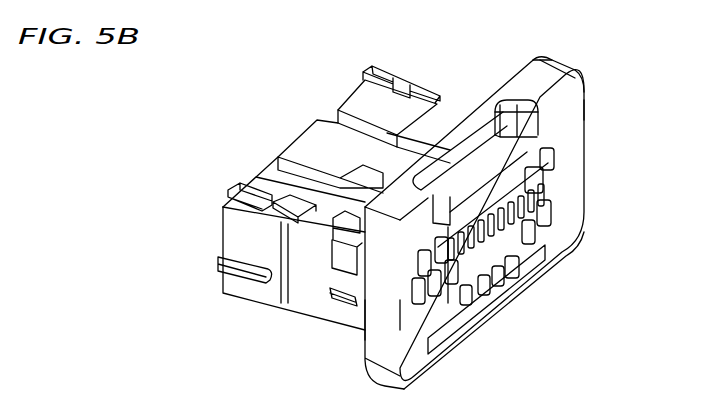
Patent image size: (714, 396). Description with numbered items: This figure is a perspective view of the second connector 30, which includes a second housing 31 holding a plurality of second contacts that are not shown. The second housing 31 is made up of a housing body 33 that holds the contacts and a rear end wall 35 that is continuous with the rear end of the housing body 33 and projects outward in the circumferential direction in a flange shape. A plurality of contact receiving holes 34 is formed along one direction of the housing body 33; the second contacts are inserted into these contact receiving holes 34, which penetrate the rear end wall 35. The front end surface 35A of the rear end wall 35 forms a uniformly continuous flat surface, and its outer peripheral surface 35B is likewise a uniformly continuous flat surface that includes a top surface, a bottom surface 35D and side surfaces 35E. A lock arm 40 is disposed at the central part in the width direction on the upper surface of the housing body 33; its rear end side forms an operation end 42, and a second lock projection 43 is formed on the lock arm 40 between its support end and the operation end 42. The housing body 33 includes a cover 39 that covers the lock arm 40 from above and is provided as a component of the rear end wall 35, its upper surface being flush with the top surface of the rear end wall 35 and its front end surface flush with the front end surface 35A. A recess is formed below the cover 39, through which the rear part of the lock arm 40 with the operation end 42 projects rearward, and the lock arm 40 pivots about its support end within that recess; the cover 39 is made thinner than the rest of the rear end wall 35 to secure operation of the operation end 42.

The second connector 30 is at (588, 100).
The second housing 31 is at (349, 94).
The housing body 33 is at (440, 93).
The contact receiving holes 34 is at (440, 318).
The rear end wall 35 is at (588, 127).
The front end surface 35A is at (363, 352).
The outer peripheral surface 35B is at (585, 50).
The bottom surface 35D is at (500, 312).
The side surfaces 35E is at (382, 317).
The cover 39 is at (488, 117).
The lock arm 40 is at (472, 130).
The operation end 42 is at (510, 102).
The second lock projection 43 is at (383, 172).